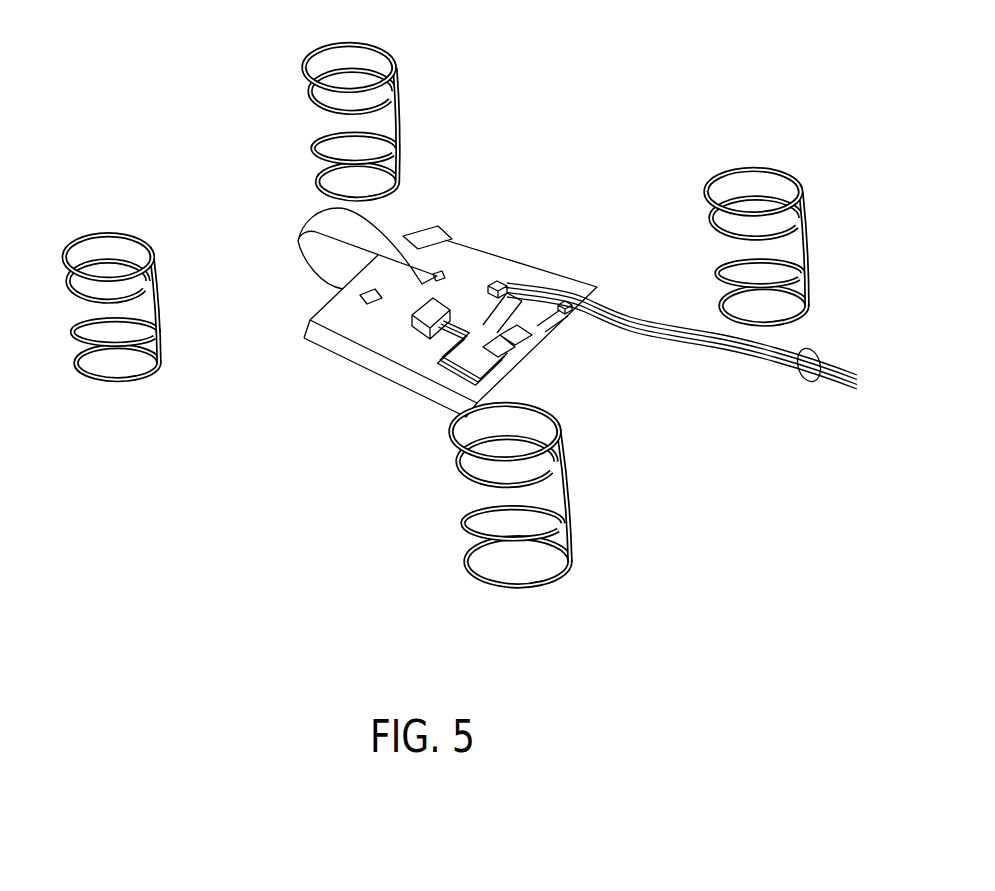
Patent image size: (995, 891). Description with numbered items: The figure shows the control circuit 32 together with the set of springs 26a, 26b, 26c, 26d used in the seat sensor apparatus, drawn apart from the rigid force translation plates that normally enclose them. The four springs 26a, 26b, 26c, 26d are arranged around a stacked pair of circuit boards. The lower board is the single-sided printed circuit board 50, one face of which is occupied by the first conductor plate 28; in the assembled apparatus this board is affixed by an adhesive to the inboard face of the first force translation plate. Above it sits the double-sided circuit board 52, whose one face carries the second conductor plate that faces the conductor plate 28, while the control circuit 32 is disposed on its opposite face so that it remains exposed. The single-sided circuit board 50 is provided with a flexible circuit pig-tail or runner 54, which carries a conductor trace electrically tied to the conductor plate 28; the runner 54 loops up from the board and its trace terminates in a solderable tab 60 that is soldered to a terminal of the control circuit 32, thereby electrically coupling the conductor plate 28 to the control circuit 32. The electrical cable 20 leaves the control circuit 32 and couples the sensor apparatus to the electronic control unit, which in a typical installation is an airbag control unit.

The electrical cable 20 is at (815, 352).
The spring 26a is at (573, 540).
The spring 26b is at (805, 245).
The spring 26c is at (393, 62).
The spring 26d is at (108, 233).
The first conductor plate 28 is at (342, 350).
The control circuit 32 is at (475, 280).
The single-sided printed circuit board 50 is at (438, 337).
The double-sided circuit board 52 is at (548, 346).
The flexible circuit runner 54 is at (305, 243).
The solderable tab 60 is at (440, 272).